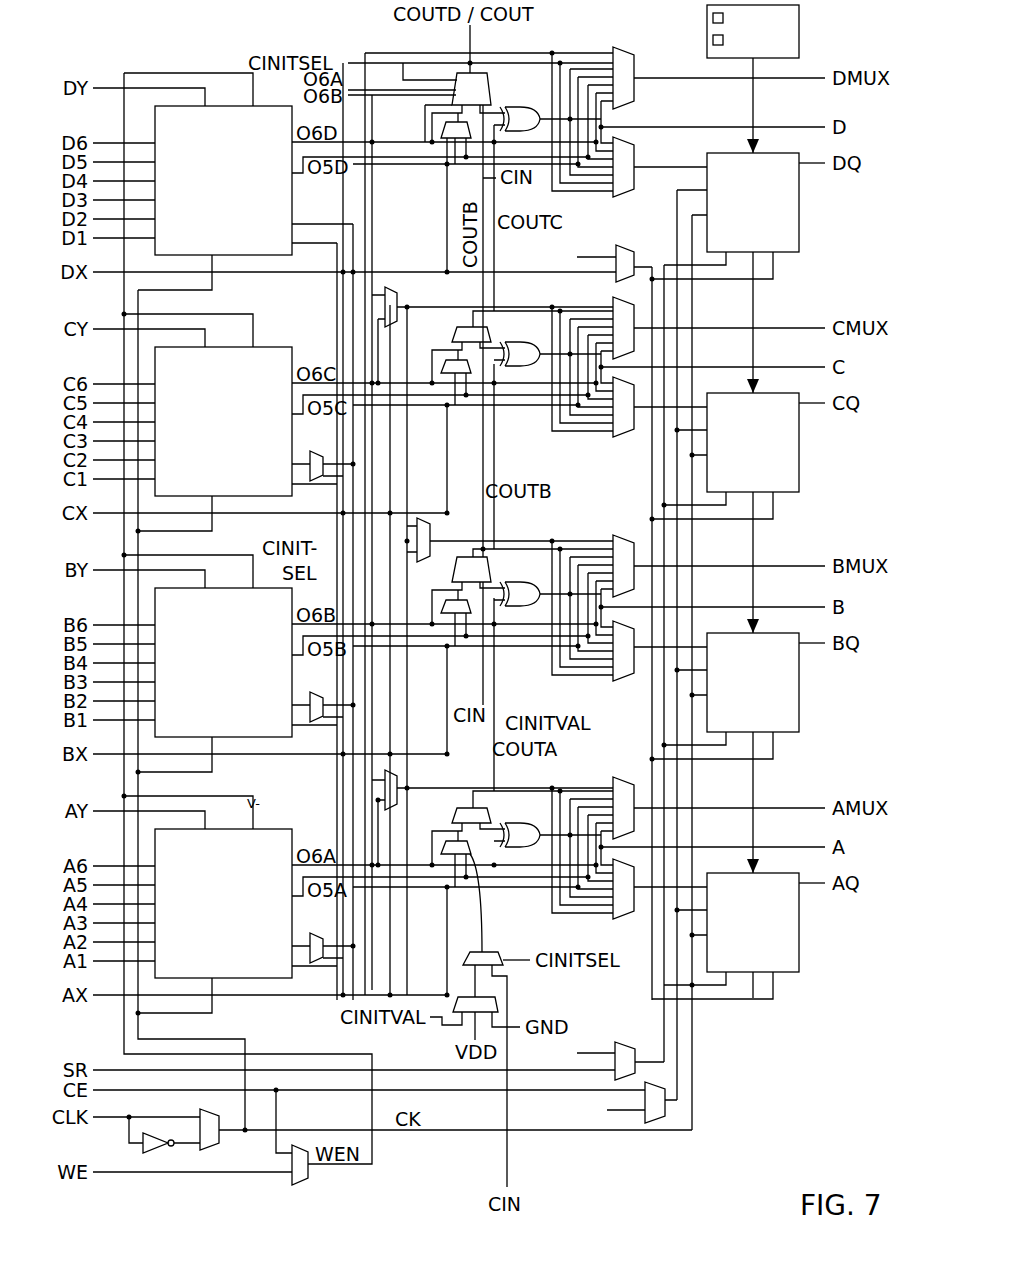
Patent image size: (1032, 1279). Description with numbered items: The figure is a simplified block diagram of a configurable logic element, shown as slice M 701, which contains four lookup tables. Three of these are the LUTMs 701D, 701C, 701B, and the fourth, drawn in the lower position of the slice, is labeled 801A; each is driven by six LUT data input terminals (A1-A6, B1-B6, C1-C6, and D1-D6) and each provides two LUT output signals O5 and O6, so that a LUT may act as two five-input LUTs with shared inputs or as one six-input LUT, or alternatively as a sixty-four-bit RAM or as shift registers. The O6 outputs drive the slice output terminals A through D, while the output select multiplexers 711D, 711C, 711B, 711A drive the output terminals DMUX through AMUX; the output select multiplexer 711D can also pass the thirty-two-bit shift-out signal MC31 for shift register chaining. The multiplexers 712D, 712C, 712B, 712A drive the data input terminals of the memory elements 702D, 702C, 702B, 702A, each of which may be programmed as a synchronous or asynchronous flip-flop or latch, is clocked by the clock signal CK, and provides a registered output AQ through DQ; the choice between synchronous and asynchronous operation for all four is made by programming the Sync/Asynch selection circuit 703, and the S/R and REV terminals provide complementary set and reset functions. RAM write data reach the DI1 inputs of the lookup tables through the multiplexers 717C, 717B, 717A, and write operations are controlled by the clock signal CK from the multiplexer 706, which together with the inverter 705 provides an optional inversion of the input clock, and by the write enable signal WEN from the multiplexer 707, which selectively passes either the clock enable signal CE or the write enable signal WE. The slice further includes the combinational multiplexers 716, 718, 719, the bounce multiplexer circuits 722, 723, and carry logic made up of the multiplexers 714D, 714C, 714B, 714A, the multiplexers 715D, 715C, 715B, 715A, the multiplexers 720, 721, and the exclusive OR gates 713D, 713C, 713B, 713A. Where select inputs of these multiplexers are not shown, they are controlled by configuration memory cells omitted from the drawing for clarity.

The slice M 701 is at (194, 52).
The lookup table (LUTM) 701D is at (223, 180).
The lookup table (LUTM) 701C is at (223, 421).
The lookup table (LUTM) 701B is at (223, 662).
The lookup table A 801A is at (223, 903).
The memory element 702D is at (725, 216).
The memory element 702C is at (725, 456).
The memory element 702B is at (725, 696).
The memory element 702A is at (725, 936).
The Sync/Asynch selection circuit 703 is at (707, 40).
The inverter 705 is at (153, 1152).
The multiplexer 706 is at (219, 1142).
The multiplexer 707 is at (298, 1187).
The output select multiplexer 711D is at (637, 85).
The output select multiplexer 711C is at (613, 300).
The output select multiplexer 711B is at (613, 538).
The output select multiplexer 711A is at (613, 780).
The multiplexer 712D is at (636, 165).
The multiplexer 712C is at (614, 436).
The multiplexer 712B is at (614, 680).
The multiplexer 712A is at (614, 918).
The exclusive OR gate 713D is at (520, 108).
The exclusive OR gate 713C is at (522, 345).
The exclusive OR gate 713B is at (522, 585).
The exclusive OR gate 713A is at (522, 826).
The multiplexer 714D is at (476, 72).
The multiplexer 714C is at (470, 326).
The multiplexer 714B is at (466, 557).
The multiplexer 714A is at (466, 808).
The multiplexer 715D is at (450, 140).
The multiplexer 715C is at (468, 378).
The multiplexer 715B is at (468, 618).
The multiplexer 715A is at (470, 858).
The combinational multiplexer 716 is at (392, 288).
The multiplexer 717C is at (320, 483).
The multiplexer 717B is at (320, 724).
The multiplexer 717A is at (320, 965).
The combinational multiplexer 718 is at (417, 536).
The combinational multiplexer 719 is at (393, 806).
The multiplexer 720 is at (508, 995).
The multiplexer 721 is at (620, 246).
The bounce multiplexer circuit 722 is at (618, 1044).
The bounce multiplexer circuit 723 is at (650, 1122).